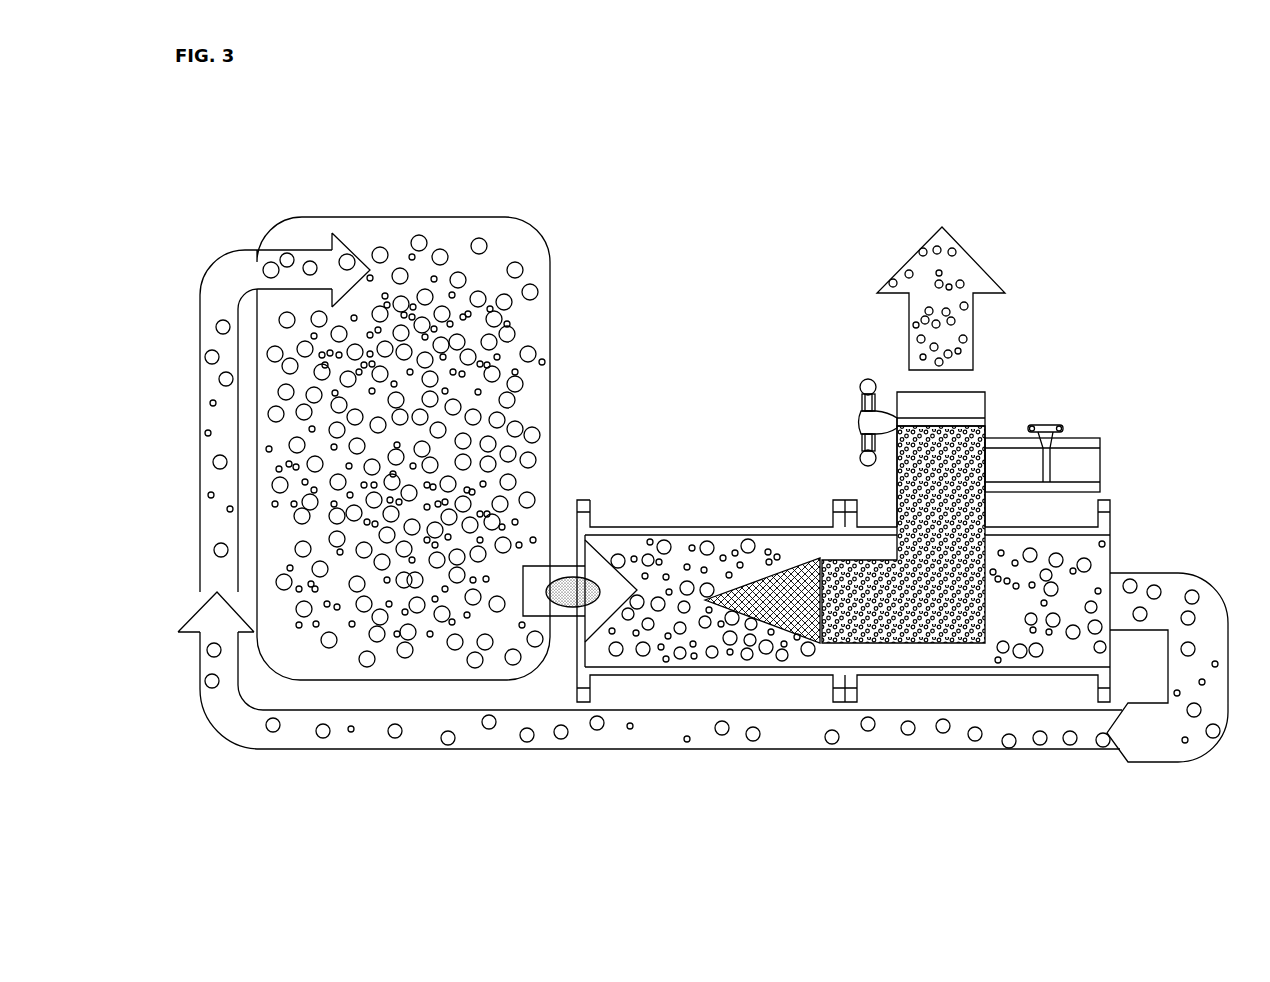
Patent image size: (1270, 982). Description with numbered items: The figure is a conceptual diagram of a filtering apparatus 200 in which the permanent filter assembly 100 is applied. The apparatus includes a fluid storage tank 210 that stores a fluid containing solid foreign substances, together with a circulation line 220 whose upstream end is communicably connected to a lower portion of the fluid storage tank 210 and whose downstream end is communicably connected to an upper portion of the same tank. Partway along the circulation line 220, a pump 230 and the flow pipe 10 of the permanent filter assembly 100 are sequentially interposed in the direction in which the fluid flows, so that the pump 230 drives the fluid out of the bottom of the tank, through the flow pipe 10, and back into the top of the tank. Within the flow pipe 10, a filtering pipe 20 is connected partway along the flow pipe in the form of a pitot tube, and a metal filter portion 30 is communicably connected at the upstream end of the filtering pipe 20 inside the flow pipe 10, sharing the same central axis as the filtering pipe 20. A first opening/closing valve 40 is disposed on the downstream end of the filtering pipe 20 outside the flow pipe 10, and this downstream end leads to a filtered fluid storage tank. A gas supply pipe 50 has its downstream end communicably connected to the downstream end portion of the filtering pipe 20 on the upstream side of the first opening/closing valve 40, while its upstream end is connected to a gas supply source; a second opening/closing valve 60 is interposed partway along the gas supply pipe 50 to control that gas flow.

The filtering apparatus 200 is at (852, 203).
The fluid storage tank 210 is at (550, 330).
The circulation line 220 is at (1166, 572).
The pump 230 is at (567, 577).
The permanent filter assembly 100 is at (993, 432).
The flow pipe 10 is at (1003, 676).
The filtering pipe 20 is at (903, 644).
The metal filter portion 30 is at (795, 634).
The first opening/closing valve 40 is at (859, 422).
The gas supply pipe 50 is at (1100, 443).
The second opening/closing valve 60 is at (1062, 425).